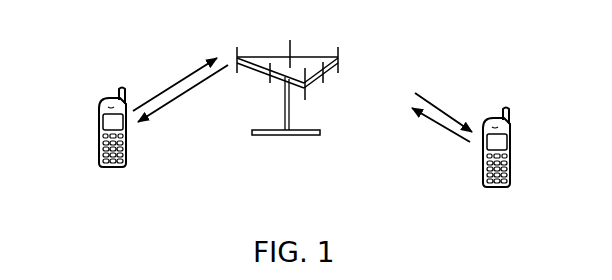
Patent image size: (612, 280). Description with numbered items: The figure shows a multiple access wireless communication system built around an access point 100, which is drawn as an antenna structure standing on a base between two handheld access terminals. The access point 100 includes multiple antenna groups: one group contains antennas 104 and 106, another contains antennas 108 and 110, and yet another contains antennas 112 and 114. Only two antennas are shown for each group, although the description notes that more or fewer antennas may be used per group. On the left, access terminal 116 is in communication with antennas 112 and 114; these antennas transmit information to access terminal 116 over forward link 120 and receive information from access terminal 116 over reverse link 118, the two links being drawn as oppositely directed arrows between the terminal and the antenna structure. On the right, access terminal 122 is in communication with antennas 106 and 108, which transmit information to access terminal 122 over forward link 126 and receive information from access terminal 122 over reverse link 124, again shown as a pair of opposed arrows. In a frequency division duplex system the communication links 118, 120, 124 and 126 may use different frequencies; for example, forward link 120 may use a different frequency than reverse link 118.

The access point 100 is at (292, 137).
The antenna 104 is at (307, 95).
The antenna 106 is at (325, 78).
The antenna 108 is at (340, 63).
The antenna 110 is at (291, 45).
The antenna 112 is at (238, 50).
The antenna 114 is at (271, 85).
The access terminal 116 is at (100, 115).
The reverse link 118 is at (183, 77).
The forward link 120 is at (175, 95).
The access terminal 122 is at (512, 135).
The reverse link 124 is at (445, 128).
The forward link 126 is at (443, 112).